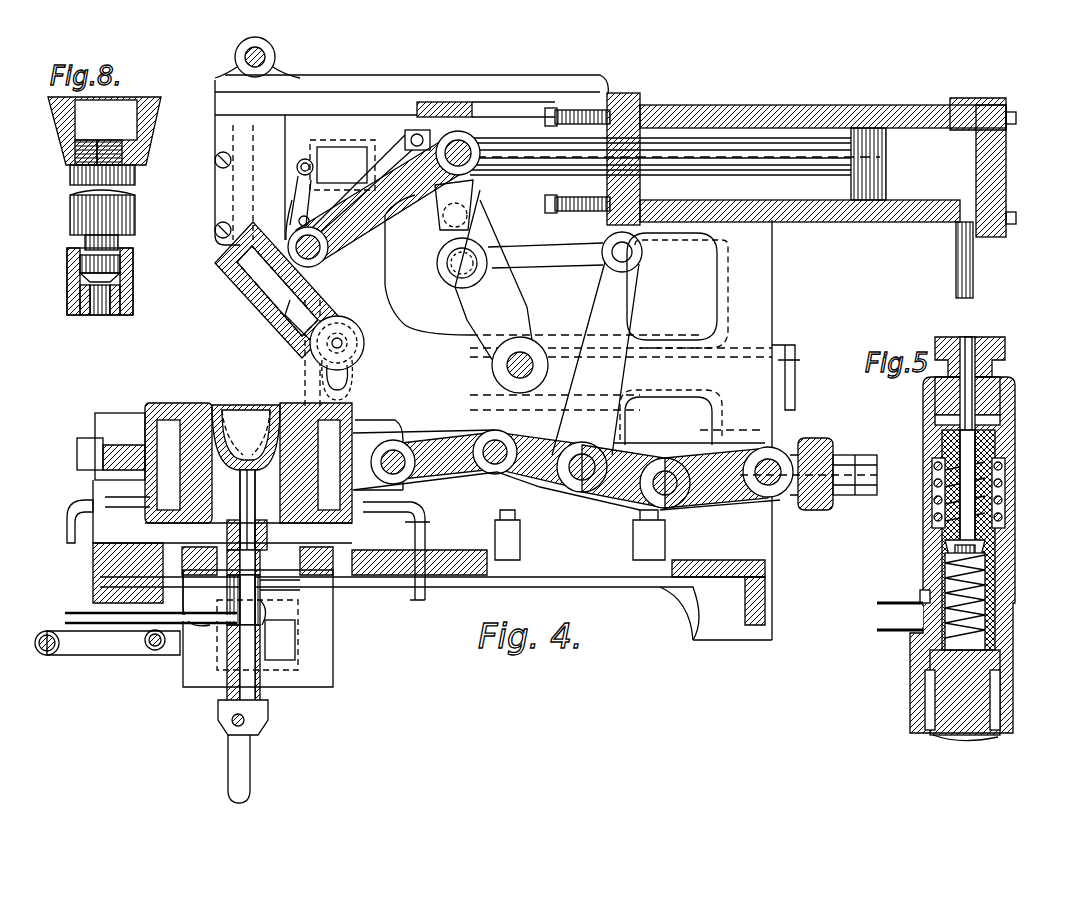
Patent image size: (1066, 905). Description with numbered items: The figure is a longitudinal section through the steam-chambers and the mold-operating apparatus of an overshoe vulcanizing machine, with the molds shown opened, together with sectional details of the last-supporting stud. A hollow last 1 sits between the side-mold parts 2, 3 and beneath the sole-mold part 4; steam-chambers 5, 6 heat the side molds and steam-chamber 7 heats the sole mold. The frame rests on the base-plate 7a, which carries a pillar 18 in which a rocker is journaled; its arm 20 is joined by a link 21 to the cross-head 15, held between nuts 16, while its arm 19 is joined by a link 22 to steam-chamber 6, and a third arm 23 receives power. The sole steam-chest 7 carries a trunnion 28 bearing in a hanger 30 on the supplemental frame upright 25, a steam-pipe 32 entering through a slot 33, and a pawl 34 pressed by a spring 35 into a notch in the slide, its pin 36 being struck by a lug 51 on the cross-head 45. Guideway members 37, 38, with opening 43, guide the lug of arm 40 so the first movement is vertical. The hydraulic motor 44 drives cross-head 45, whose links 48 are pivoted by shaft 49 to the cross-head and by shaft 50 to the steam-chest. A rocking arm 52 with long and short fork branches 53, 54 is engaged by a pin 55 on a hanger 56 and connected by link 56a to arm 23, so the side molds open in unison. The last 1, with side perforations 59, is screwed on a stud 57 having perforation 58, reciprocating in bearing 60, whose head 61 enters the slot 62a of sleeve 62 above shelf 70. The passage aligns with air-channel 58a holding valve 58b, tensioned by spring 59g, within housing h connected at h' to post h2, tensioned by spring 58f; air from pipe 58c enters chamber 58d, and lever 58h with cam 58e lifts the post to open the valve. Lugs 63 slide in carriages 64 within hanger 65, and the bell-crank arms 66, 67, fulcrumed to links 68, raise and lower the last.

In FIG. 8, the last 1 is at (112, 128).
In FIG. 4, the last 1 is at (248, 410).
In FIG. 4, the side-mold part 2 is at (198, 410).
In FIG. 4, the side-mold part 3 is at (292, 410).
In FIG. 4, the sole-mold part 4 is at (265, 305).
In FIG. 4, the steam-chamber 5 is at (155, 527).
In FIG. 4, the steam-chamber 6 is at (340, 530).
In FIG. 4, the steam-chamber 7 is at (277, 290).
In FIG. 4, the base-plate 7a is at (455, 555).
In FIG. 4, the cross-head 15 is at (812, 438).
In FIG. 4, the nuts 16 is at (792, 452).
In FIG. 4, the pillar 18 is at (610, 515).
In FIG. 4, the rocker-arm 19 is at (540, 485).
In FIG. 4, the rocker-arm 20 is at (640, 460).
In FIG. 4, the link 21 is at (715, 495).
In FIG. 4, the link 22 is at (445, 440).
In FIG. 4, the third rocker arm 23 is at (630, 308).
In FIG. 4, the side upright 25 is at (677, 339).
In FIG. 4, the trunnion 28 is at (365, 355).
In FIG. 4, the hanger 30 is at (355, 325).
In FIG. 4, the steam-pipe 32 is at (335, 345).
In FIG. 4, the slot 33 is at (343, 380).
In FIG. 4, the pawl 34 is at (297, 185).
In FIG. 4, the spring 35 is at (290, 205).
In FIG. 4, the pin 36 is at (305, 158).
In FIG. 4, the guideway member 37 is at (270, 202).
In FIG. 4, the guideway member 38 is at (235, 225).
In FIG. 4, the arm 40 is at (405, 158).
In FIG. 4, the opening 43 is at (255, 176).
In FIG. 4, the hydraulic motor 44 is at (873, 222).
In FIG. 4, the cross-head 45 is at (440, 102).
In FIG. 4, the links 48 is at (418, 215).
In FIG. 4, the shaft 49 is at (470, 135).
In FIG. 4, the shaft 50 is at (328, 255).
In FIG. 4, the lug 51 is at (405, 138).
In FIG. 4, the rocking arm 52 is at (515, 310).
In FIG. 4, the fork branch 53 is at (482, 210).
In FIG. 4, the fork branch 54 is at (440, 250).
In FIG. 4, the pin 55 is at (440, 212).
In FIG. 4, the hanger 56 is at (473, 193).
In FIG. 4, the link 56a is at (535, 260).
In FIG. 5, the stud 57 is at (955, 337).
In FIG. 4, the stud 57 is at (262, 510).
In FIG. 5, the longitudinal perforation 58 is at (972, 337).
In FIG. 4, the longitudinal perforation 58 is at (248, 475).
In FIG. 5, the air-channel 58a is at (1000, 498).
In FIG. 5, the air-valve 58b is at (985, 550).
In FIG. 5, the air-pipe 58c is at (878, 618).
In FIG. 4, the air-pipe 58c is at (80, 612).
In FIG. 5, the chamber 58d is at (930, 595).
In FIG. 4, the cam 58e is at (245, 718).
In FIG. 5, the spring 58f is at (1005, 478).
In FIG. 4, the hand-lever 58h is at (250, 775).
In FIG. 4, the side perforations 59 is at (236, 445).
In FIG. 5, the spring 59g is at (985, 583).
In FIG. 4, the vertical bearing 60 is at (268, 533).
In FIG. 8, the head 61 is at (85, 275).
In FIG. 5, the head 61 is at (942, 395).
In FIG. 4, the head 61 is at (260, 560).
In FIG. 8, the tubular sleeve 62 is at (133, 270).
In FIG. 5, the tubular sleeve 62 is at (1012, 395).
In FIG. 4, the tubular sleeve 62 is at (228, 575).
In FIG. 8, the slot 62a is at (80, 262).
In FIG. 4, the side lugs 63 is at (262, 685).
In FIG. 4, the carriages 64 is at (295, 640).
In FIG. 4, the hanger 65 is at (333, 618).
In FIG. 4, the hand-lever arm 66 is at (168, 655).
In FIG. 4, the short arm 67 is at (262, 600).
In FIG. 4, the links 68 is at (300, 587).
In FIG. 5, the shelf 70 is at (1013, 428).
In FIG. 8, the housing h is at (121, 300).
In FIG. 5, the housing h is at (936, 490).
In FIG. 5, the connection h' is at (981, 691).
In FIG. 5, the movable post h2 is at (972, 738).